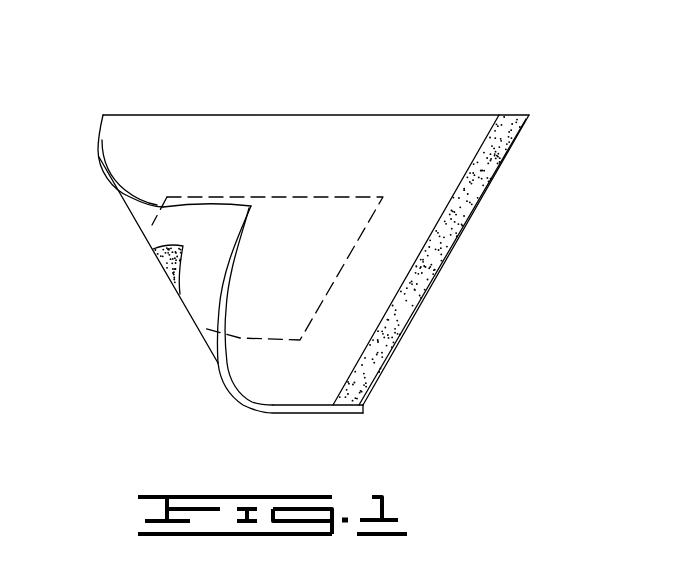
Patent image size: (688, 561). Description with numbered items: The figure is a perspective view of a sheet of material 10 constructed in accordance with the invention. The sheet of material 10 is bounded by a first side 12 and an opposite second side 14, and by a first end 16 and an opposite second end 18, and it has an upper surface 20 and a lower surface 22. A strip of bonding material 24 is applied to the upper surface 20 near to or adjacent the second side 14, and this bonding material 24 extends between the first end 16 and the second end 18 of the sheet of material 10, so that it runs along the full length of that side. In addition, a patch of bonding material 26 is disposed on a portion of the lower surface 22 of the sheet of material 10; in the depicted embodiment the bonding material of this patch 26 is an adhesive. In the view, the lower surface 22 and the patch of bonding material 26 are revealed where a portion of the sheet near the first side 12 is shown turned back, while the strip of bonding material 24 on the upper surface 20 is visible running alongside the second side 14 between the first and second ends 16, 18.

The sheet of material 10 is at (260, 63).
The first side 12 is at (100, 131).
The second side 14 is at (482, 210).
The first end 16 is at (297, 415).
The second end 18 is at (210, 115).
The upper surface 20 is at (351, 133).
The lower surface 22 is at (203, 297).
The strip of bonding material 24 is at (496, 152).
The patch of bonding material 26 is at (168, 271).